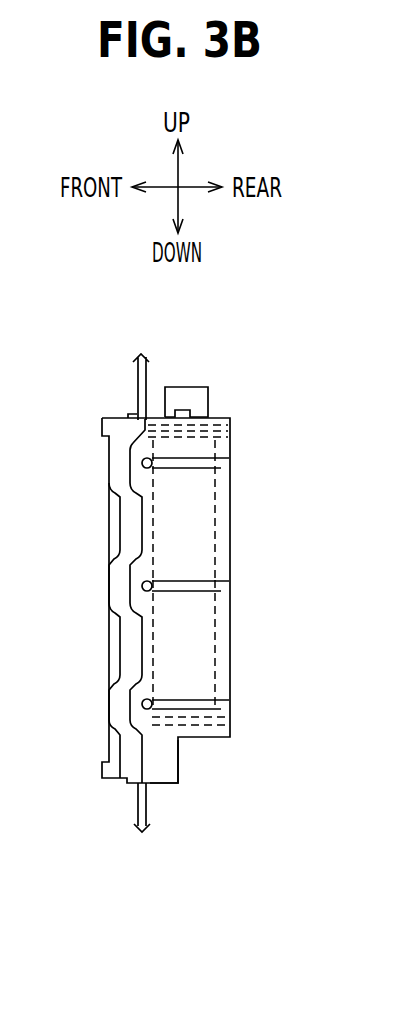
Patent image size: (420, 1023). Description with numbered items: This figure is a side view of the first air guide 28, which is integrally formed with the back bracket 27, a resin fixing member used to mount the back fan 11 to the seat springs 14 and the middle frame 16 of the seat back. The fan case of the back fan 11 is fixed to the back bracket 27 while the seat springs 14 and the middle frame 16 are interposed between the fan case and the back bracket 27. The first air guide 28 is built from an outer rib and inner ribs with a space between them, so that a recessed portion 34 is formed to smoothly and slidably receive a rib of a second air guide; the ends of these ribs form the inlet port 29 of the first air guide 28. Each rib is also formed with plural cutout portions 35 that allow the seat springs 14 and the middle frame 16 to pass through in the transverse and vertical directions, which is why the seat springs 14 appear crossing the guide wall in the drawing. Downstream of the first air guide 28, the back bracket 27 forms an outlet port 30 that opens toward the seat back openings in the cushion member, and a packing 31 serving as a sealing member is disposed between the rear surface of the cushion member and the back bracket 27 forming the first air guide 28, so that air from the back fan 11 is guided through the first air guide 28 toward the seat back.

The back fan 11 is at (213, 657).
The seat springs 14 is at (142, 463).
The middle frame 16 is at (133, 806).
The back bracket 27 is at (157, 787).
The first air guide 28 is at (218, 419).
The inlet port 29 is at (232, 513).
The outlet port 30 is at (108, 535).
The packing 31 is at (118, 703).
The recessed portion 34 is at (238, 428).
The cutout portions 35 is at (222, 467).